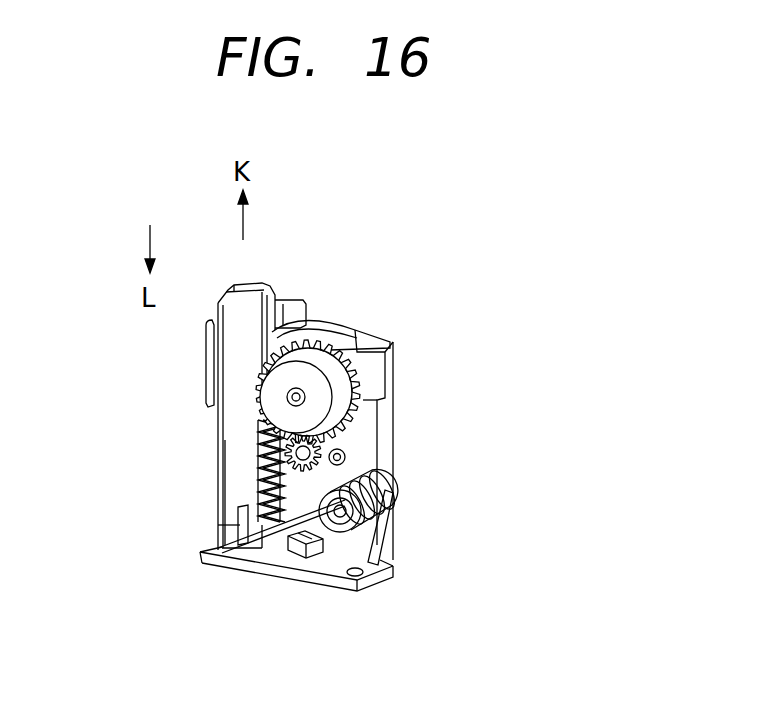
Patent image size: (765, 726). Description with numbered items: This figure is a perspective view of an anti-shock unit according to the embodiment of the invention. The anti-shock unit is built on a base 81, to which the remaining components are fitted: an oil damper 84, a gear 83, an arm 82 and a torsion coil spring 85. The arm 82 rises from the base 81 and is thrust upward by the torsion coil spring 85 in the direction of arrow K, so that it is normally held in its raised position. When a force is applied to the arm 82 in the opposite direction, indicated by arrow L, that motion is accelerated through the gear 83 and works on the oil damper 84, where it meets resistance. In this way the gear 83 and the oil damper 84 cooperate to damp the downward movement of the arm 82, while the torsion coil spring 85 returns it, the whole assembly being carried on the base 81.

The base 81 is at (300, 580).
The arm 82 is at (245, 308).
The gear 83 is at (358, 384).
The oil damper 84 is at (345, 454).
The torsion coil spring 85 is at (375, 498).